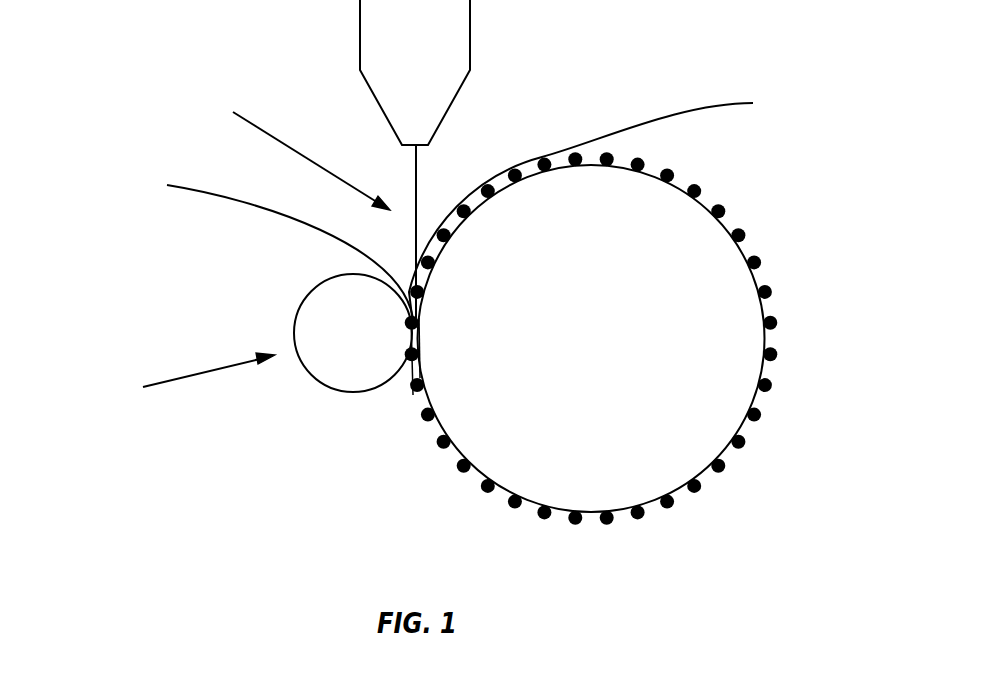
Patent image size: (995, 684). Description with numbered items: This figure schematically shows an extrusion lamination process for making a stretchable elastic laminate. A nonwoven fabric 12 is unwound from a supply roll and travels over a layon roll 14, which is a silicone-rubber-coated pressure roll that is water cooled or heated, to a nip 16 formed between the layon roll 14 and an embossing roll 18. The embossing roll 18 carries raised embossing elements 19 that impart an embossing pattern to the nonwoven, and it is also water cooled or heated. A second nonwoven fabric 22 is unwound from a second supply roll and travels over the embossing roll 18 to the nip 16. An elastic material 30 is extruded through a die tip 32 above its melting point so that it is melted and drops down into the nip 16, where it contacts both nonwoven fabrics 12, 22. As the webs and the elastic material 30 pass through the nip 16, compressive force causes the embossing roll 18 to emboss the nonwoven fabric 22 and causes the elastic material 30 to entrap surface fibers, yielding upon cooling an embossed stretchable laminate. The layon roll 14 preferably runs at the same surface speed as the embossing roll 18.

The nonwoven fabric 12 is at (217, 193).
The layon roll 14 is at (298, 312).
The nip 16 is at (402, 309).
The embossing roll 18 is at (737, 388).
The raised embossing elements 19 is at (777, 293).
The second nonwoven fabric 22 is at (675, 112).
The elastic material 30 is at (418, 197).
The die tip 32 is at (418, 150).